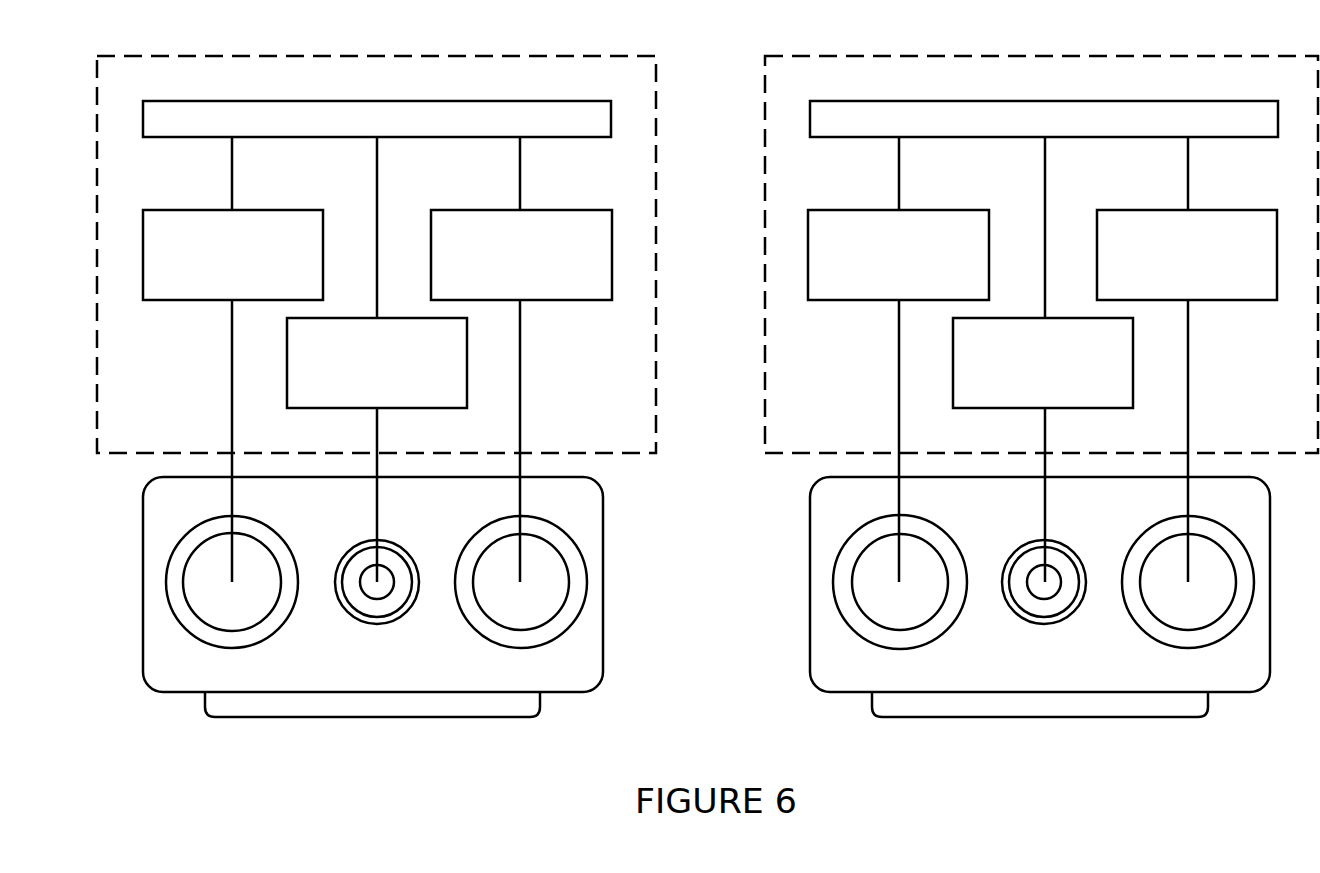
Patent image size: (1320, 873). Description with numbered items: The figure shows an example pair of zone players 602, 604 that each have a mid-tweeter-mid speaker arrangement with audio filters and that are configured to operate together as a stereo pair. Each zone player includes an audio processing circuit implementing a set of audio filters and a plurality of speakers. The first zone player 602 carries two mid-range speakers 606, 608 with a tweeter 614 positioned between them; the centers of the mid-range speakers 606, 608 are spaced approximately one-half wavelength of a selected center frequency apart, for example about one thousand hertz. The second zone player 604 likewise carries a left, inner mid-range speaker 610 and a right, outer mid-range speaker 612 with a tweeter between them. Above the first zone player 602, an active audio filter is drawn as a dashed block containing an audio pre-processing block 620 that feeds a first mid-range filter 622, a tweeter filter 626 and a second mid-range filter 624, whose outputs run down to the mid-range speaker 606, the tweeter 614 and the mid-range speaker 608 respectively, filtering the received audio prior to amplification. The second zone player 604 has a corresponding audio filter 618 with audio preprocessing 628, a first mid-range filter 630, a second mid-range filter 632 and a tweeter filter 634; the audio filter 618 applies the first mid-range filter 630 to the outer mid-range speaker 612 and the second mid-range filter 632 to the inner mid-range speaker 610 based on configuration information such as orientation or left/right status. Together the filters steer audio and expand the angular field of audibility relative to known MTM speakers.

The zone player 602 is at (142, 513).
The zone player 604 is at (810, 497).
The mid-range speaker 606 is at (248, 517).
The mid-range speaker 608 is at (492, 640).
The mid-range speaker 610 is at (913, 515).
The mid-range speaker 612 is at (1157, 640).
The tweeter 614 is at (378, 623).
The audio filter 618 is at (793, 56).
The audio pre-processing block 620 is at (558, 100).
The first mid-range filter 622 is at (195, 210).
The second mid-range filter 624 is at (558, 210).
The tweeter filter 626 is at (339, 410).
The audio preprocessing 628 is at (1212, 100).
The first mid-range filter 630 is at (1214, 210).
The second mid-range filter 632 is at (872, 210).
The tweeter filter 634 is at (1007, 410).